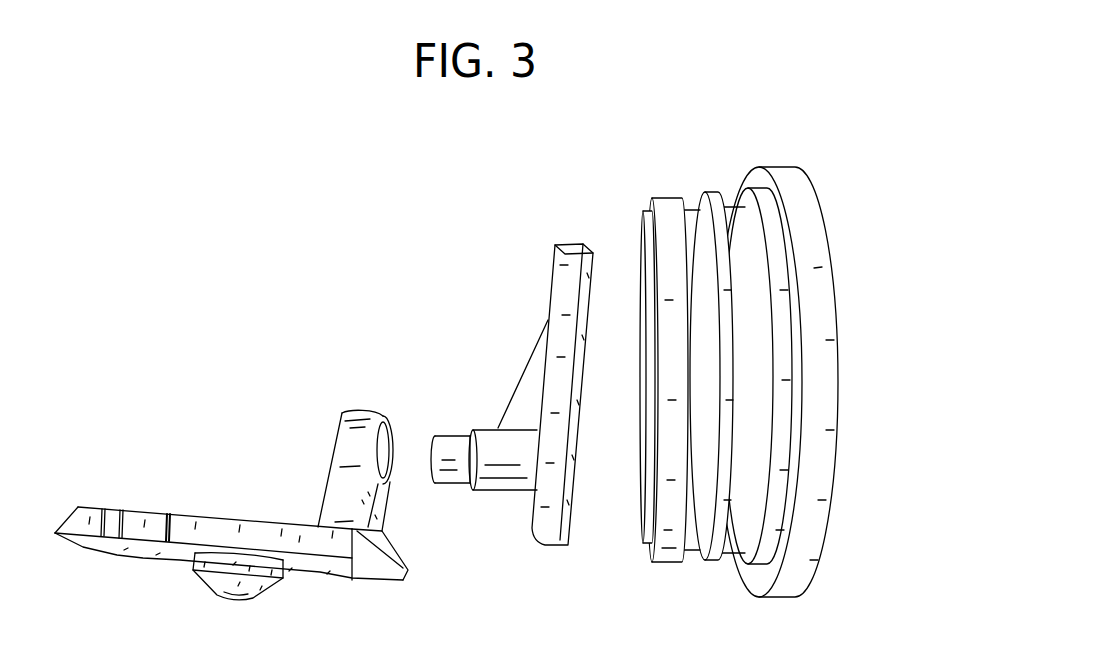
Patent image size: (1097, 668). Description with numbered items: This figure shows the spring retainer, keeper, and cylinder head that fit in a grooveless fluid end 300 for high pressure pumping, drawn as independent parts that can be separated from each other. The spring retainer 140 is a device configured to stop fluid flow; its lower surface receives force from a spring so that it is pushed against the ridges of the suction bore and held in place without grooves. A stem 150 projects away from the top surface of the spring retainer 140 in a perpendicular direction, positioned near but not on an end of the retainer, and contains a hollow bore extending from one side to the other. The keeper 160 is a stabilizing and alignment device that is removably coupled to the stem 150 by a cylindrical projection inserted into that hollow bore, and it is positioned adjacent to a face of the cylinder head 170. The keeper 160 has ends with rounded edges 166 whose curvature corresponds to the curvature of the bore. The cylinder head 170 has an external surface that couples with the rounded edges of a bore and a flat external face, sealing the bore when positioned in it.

The grooveless fluid end 300 is at (230, 255).
The spring retainer 140 is at (230, 555).
The stem 150 is at (363, 425).
The keeper 160 is at (490, 440).
The rounded ends 166 is at (547, 512).
The cylinder head 170 is at (738, 210).